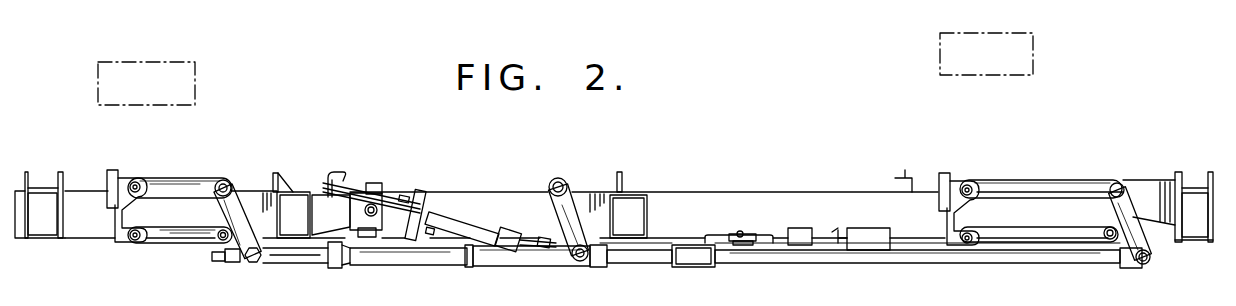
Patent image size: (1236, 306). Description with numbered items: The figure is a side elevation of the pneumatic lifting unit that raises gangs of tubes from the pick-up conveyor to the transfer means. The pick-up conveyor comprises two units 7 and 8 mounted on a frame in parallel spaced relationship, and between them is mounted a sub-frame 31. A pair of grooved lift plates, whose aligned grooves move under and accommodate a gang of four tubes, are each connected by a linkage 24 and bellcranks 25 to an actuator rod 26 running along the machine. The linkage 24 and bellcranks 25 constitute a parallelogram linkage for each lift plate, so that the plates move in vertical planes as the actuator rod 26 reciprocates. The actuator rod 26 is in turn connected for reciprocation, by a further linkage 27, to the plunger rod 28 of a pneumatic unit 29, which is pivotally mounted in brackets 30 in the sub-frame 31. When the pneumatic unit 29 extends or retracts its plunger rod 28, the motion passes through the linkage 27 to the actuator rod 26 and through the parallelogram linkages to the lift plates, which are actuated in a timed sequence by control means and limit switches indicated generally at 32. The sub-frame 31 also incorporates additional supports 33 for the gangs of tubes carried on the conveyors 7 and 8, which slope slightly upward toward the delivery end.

The pick-up conveyor unit 7 is at (1210, 172).
The pick-up conveyor unit 8 is at (25, 172).
The linkage 24 is at (188, 243).
The bellcrank 25 is at (188, 190).
The actuator rod 26 is at (413, 257).
The linkage 27 is at (557, 214).
The plunger rod 28 is at (478, 226).
The pneumatic unit 29 is at (428, 218).
The bracket 30 is at (331, 215).
The sub-frame 31 is at (310, 213).
The control means and limit switches 32 is at (752, 232).
The additional support 33 is at (279, 175).